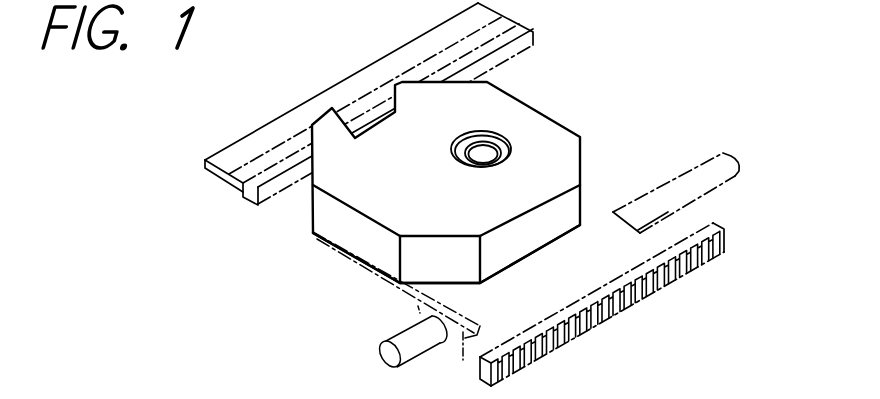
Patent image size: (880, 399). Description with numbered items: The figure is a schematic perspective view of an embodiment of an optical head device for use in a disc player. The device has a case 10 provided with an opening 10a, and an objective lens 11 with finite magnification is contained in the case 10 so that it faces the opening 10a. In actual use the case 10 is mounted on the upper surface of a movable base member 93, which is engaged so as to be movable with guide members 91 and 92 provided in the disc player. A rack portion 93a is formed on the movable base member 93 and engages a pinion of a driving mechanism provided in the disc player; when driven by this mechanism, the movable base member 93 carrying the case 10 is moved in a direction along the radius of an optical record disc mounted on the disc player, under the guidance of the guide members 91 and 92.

The case 10 is at (472, 172).
The opening 10a is at (452, 148).
The objective lens 11 is at (485, 143).
The guide member 91 is at (716, 157).
The guide member 92 is at (296, 160).
The movable base member 93 is at (602, 266).
The rack portion 93a is at (651, 297).